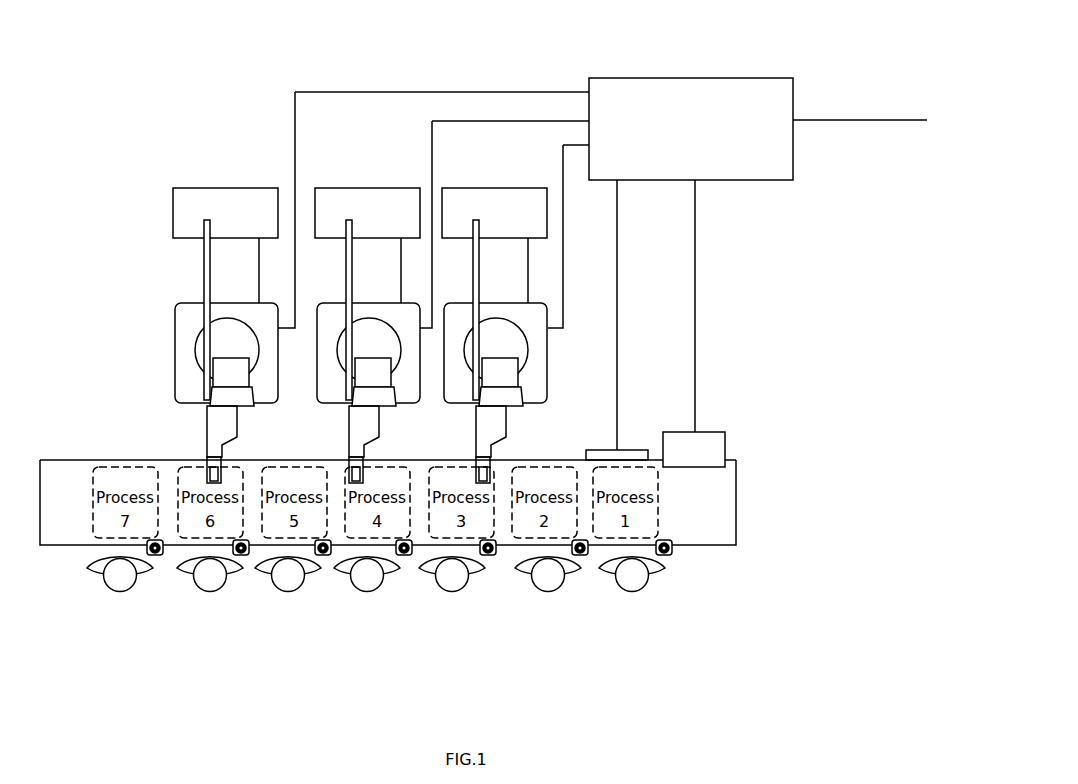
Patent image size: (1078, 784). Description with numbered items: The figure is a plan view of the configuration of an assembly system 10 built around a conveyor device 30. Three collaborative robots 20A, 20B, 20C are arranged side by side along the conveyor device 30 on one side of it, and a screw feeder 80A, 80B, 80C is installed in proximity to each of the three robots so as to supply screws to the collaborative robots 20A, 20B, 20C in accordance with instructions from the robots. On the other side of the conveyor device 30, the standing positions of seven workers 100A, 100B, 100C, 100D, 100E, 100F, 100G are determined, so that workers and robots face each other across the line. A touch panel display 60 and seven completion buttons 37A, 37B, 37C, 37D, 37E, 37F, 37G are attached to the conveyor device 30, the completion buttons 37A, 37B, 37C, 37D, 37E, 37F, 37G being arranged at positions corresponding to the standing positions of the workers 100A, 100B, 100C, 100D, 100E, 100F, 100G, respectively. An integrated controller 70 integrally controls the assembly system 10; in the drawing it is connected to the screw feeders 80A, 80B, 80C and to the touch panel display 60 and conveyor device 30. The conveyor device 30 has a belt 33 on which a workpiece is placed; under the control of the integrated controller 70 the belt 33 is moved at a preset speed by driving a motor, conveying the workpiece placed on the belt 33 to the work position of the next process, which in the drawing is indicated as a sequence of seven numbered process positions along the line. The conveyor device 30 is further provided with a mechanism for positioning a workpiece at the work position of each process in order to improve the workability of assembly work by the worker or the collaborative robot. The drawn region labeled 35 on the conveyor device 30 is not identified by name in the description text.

The assembly system 10 is at (137, 117).
The collaborative robot 20A is at (515, 351).
The collaborative robot 20B is at (388, 351).
The collaborative robot 20C is at (258, 407).
The conveyor device 30 is at (737, 500).
The belt 33 is at (157, 462).
The conveying surface 35 is at (75, 467).
The completion button 37A is at (666, 557).
The completion button 37B is at (582, 557).
The completion button 37C is at (490, 557).
The completion button 37D is at (406, 557).
The completion button 37E is at (325, 557).
The completion button 37F is at (243, 557).
The completion button 37G is at (157, 557).
The touch panel display 60 is at (713, 432).
The integrated controller 70 is at (720, 78).
The screw feeder 80A is at (494, 183).
The screw feeder 80B is at (367, 183).
The screw feeder 80C is at (200, 187).
The worker 100A is at (637, 591).
The worker 100B is at (553, 591).
The worker 100C is at (457, 591).
The worker 100D is at (372, 591).
The worker 100E is at (293, 591).
The worker 100F is at (215, 591).
The worker 100G is at (125, 591).